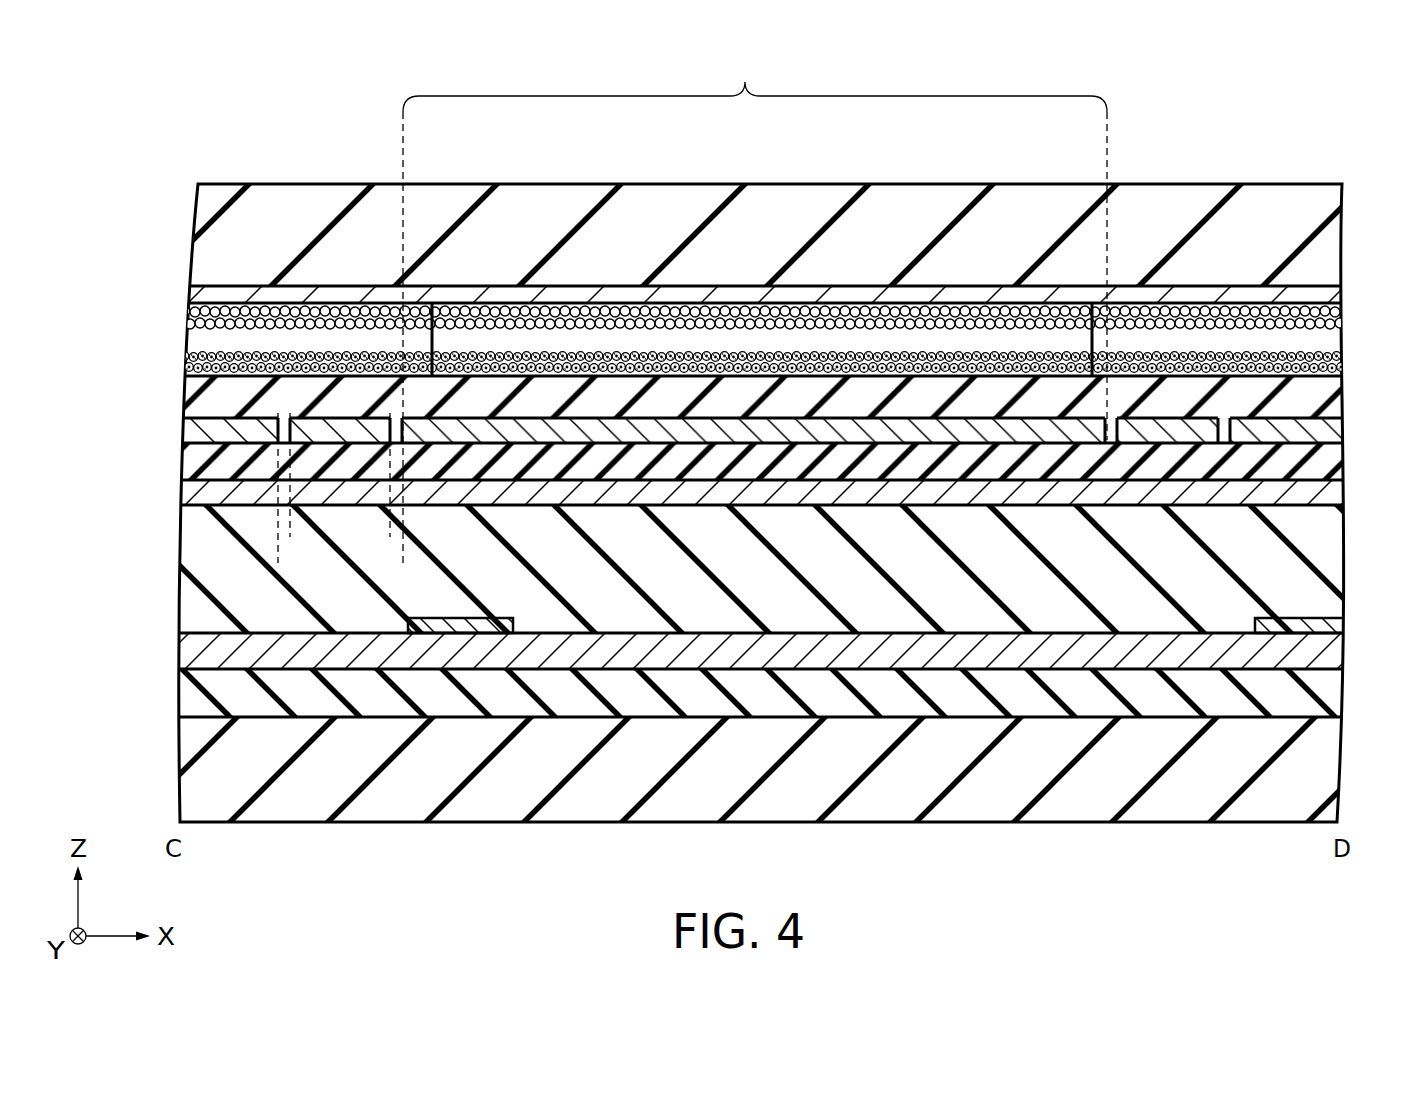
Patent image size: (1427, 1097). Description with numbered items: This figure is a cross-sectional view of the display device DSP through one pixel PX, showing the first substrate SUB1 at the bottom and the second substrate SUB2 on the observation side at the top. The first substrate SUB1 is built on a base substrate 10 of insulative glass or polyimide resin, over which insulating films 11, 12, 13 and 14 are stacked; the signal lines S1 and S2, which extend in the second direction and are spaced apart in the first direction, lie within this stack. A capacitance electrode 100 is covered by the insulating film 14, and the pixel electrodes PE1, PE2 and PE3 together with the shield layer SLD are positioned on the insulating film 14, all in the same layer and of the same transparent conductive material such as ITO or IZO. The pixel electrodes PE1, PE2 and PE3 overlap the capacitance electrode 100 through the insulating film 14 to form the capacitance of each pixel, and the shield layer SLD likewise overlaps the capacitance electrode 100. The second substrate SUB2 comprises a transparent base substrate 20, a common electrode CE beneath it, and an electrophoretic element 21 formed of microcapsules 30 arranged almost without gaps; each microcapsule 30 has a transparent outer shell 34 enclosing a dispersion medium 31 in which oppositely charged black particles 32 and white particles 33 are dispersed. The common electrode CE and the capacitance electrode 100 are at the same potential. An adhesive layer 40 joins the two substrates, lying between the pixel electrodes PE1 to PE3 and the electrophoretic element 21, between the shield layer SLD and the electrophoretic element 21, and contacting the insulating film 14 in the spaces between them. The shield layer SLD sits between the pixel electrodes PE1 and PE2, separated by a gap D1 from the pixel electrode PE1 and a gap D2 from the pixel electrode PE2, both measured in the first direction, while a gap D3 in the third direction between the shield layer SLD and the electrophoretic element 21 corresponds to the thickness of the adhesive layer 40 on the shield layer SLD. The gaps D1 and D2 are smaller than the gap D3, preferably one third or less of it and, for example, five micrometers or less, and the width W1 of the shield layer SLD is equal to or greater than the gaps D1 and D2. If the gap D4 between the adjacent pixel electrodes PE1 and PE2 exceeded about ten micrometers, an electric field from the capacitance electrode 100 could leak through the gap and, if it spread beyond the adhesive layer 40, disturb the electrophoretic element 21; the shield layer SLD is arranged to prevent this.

The base substrate 10 is at (185, 773).
The insulating film 11 is at (190, 690).
The insulating film 12 is at (190, 640).
The insulating film 13 is at (187, 580).
The insulating film 14 is at (185, 456).
The capacitance electrode 100 is at (185, 495).
The base substrate 20 is at (195, 222).
The electrophoretic element 21 is at (730, 255).
The microcapsule 30 is at (427, 298).
The dispersion medium 31 is at (563, 340).
The black particles 32 is at (595, 355).
The white particles 33 is at (610, 303).
The outer shell 34 is at (1092, 303).
The adhesive layer 40 is at (187, 392).
The first substrate SUB1 is at (165, 800).
The second substrate SUB2 is at (711, 256).
The common electrode CE is at (190, 296).
The pixel electrode PE1 is at (1090, 442).
The pixel electrode PE2 is at (185, 432).
The pixel electrode PE3 is at (1338, 432).
The shield layer SLD is at (297, 432).
The signal line S1 is at (457, 625).
The signal line S2 is at (1332, 628).
The pixel PX is at (755, 304).
The display device DSP is at (1237, 146).
The width of the shield layer W1 is at (390, 534).
The gap D1 is at (424, 405).
The gap D2 is at (312, 405).
The gap D3 is at (358, 386).
The gap D4 is at (402, 560).